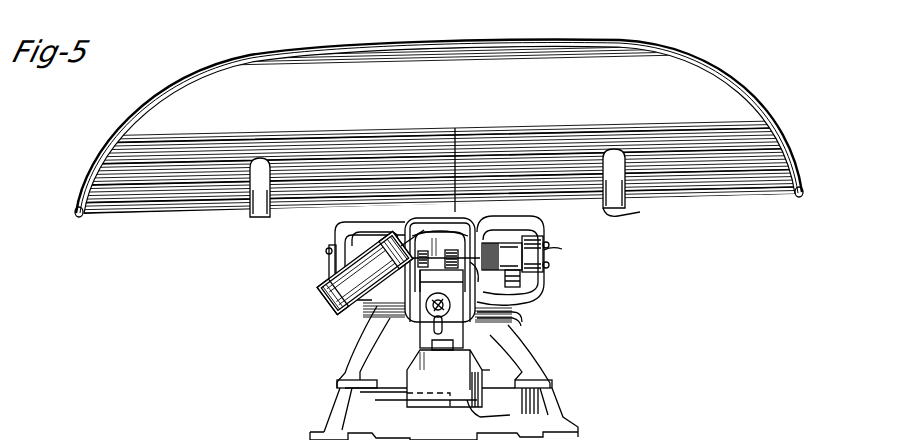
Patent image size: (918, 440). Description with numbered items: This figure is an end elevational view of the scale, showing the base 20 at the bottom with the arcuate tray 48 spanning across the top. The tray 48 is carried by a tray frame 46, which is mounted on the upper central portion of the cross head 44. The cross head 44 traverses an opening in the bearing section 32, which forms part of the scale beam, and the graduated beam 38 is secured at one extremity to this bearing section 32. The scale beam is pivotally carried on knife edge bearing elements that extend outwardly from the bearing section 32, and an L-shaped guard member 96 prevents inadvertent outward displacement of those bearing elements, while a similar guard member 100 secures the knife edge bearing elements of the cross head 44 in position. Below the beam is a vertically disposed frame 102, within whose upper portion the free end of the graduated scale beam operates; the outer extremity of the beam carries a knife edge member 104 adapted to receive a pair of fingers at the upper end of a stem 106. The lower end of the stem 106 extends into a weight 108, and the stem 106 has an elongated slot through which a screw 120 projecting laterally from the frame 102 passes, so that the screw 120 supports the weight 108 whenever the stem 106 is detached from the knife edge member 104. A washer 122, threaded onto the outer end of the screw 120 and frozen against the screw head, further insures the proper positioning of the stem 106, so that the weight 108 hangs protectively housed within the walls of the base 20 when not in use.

The base 20 is at (558, 410).
The bearing section 32 is at (564, 252).
The graduated beam 38 is at (333, 292).
The cross head 44 is at (350, 222).
The tray frame 46 is at (640, 212).
The arcuate tray 48 is at (120, 213).
The L-shaped guard member 96 is at (330, 264).
The guard member 100 is at (330, 243).
The vertically disposed frame 102 is at (455, 130).
The knife edge member 104 is at (478, 282).
The stem 106 is at (422, 342).
The weight 108 is at (468, 356).
The screw 120 is at (520, 320).
The washer 122 is at (521, 326).